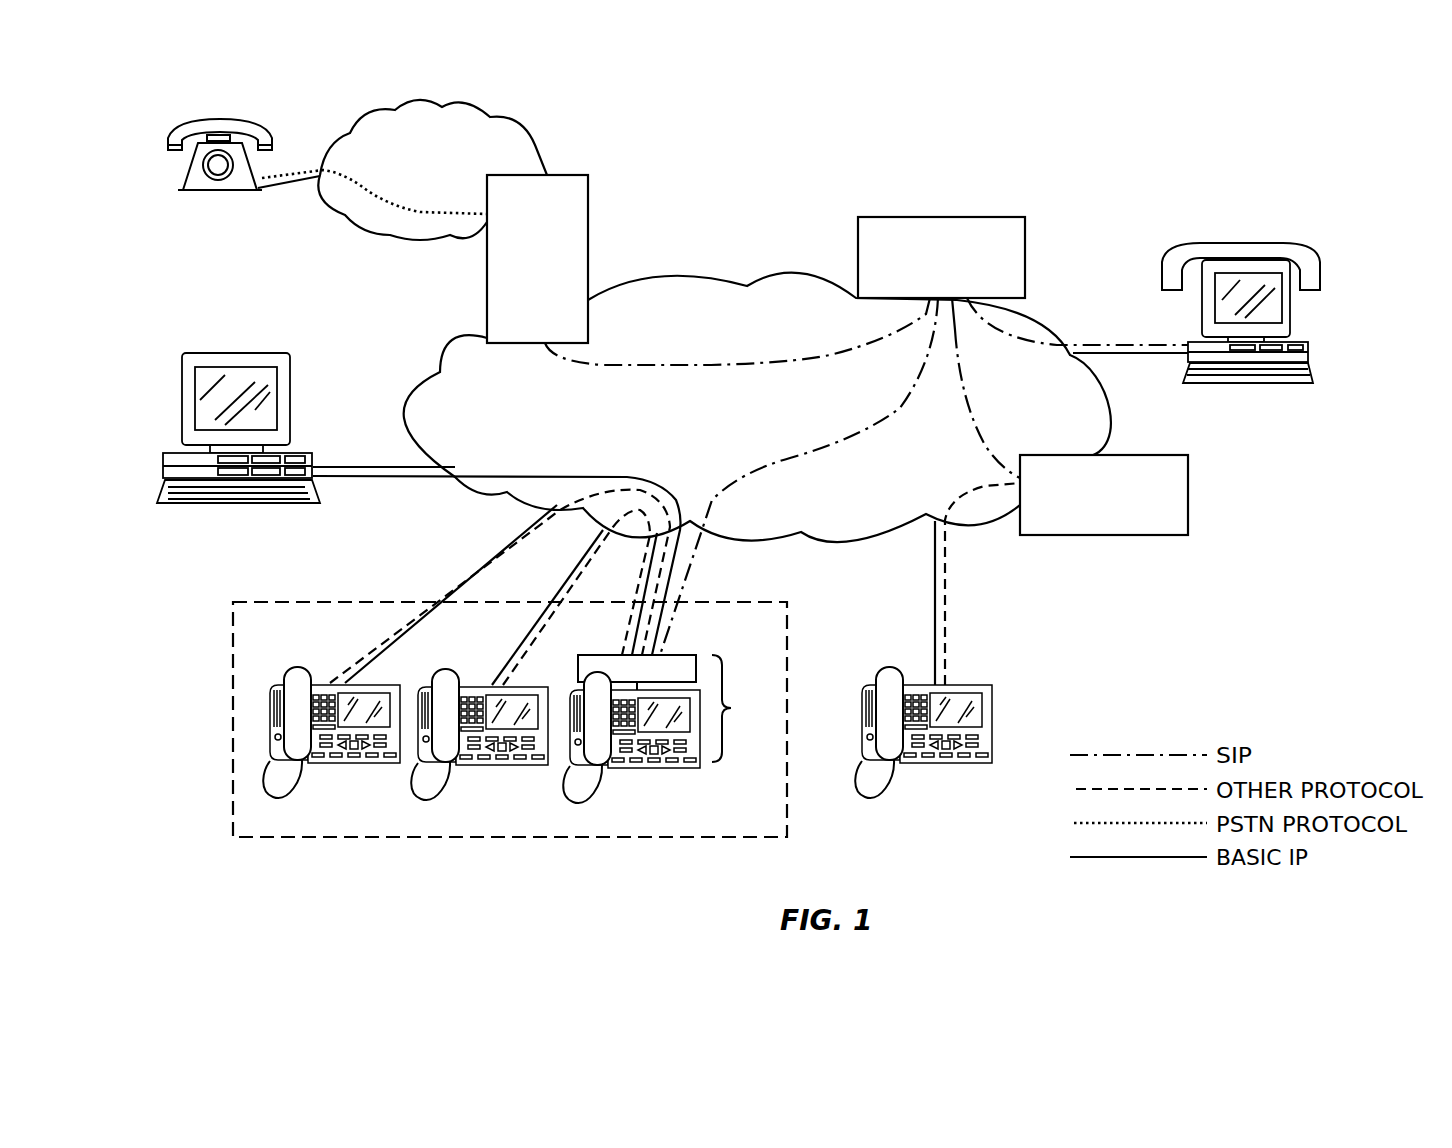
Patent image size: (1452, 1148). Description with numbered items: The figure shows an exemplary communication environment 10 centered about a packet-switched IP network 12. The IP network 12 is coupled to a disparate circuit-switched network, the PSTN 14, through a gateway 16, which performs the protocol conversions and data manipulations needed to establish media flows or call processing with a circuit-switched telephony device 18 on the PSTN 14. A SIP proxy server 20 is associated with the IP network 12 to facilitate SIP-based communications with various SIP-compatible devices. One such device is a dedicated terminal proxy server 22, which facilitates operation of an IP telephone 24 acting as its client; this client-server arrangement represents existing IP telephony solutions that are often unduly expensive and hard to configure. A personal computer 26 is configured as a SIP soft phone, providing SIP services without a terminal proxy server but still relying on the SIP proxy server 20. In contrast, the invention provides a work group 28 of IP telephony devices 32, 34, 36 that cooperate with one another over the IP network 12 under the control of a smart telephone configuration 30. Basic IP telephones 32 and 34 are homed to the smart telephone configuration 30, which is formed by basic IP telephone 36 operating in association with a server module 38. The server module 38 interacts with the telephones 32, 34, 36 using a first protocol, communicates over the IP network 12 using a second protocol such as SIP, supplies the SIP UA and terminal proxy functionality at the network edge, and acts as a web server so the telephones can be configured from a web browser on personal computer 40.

The communication environment 10 is at (920, 115).
The IP network 12 is at (732, 457).
The PSTN 14 is at (450, 198).
The gateway 16 is at (563, 175).
The circuit-switched telephony device 18 is at (233, 118).
The SIP proxy server 20 is at (973, 217).
The terminal proxy server 22 is at (1128, 454).
The IP telephone 24 is at (937, 763).
The personal computer 26 is at (1272, 243).
The work group 28 is at (292, 601).
The smart telephone configuration 30 is at (739, 708).
The basic IP telephone 32 is at (350, 763).
The basic IP telephone 34 is at (498, 765).
The basic IP telephone 36 is at (647, 768).
The server module 38 is at (683, 655).
The personal computer 40 is at (208, 504).